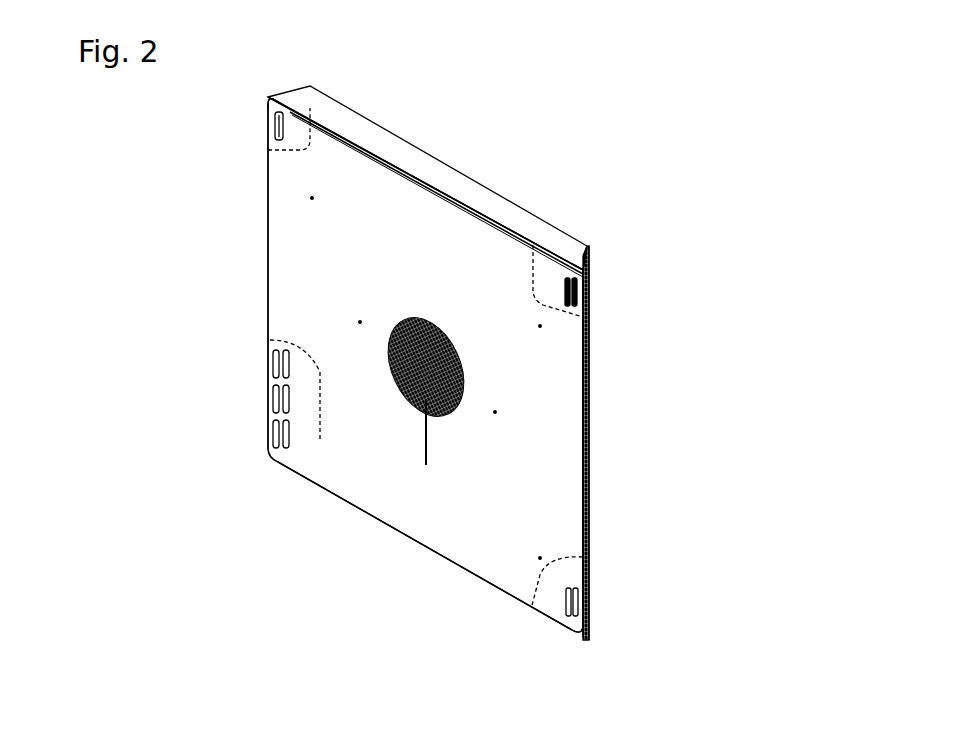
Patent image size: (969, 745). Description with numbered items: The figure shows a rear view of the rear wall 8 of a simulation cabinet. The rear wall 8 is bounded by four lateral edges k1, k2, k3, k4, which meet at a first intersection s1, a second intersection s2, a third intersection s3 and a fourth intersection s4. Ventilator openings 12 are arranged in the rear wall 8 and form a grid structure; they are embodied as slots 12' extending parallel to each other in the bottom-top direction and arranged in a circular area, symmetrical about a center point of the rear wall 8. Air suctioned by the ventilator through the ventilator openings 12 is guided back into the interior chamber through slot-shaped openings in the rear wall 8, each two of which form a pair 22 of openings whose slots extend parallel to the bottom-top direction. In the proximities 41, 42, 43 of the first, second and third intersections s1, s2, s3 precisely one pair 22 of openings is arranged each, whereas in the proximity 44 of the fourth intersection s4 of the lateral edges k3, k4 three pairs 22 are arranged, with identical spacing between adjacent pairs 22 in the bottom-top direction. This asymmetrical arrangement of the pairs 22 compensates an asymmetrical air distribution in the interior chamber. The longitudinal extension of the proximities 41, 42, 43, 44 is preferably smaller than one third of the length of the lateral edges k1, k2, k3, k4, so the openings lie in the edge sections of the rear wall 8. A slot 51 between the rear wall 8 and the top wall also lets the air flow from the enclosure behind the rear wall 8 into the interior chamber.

The rear wall 8 is at (569, 168).
The ventilator openings 12 is at (575, 367).
The slots 12' is at (567, 466).
The pair of openings 22 is at (282, 128).
The proximity of first intersection 41 is at (268, 148).
The proximity of second intersection 42 is at (590, 320).
The proximity of third intersection 43 is at (532, 605).
The proximity of fourth intersection 44 is at (320, 440).
The slot 51 is at (433, 178).
The lateral edge k1 is at (347, 126).
The lateral edge k2 is at (590, 418).
The lateral edge k3 is at (395, 540).
The lateral edge k4 is at (268, 268).
The first intersection s1 is at (269, 93).
The second intersection s2 is at (590, 268).
The third intersection s3 is at (586, 640).
The fourth intersection s4 is at (268, 458).